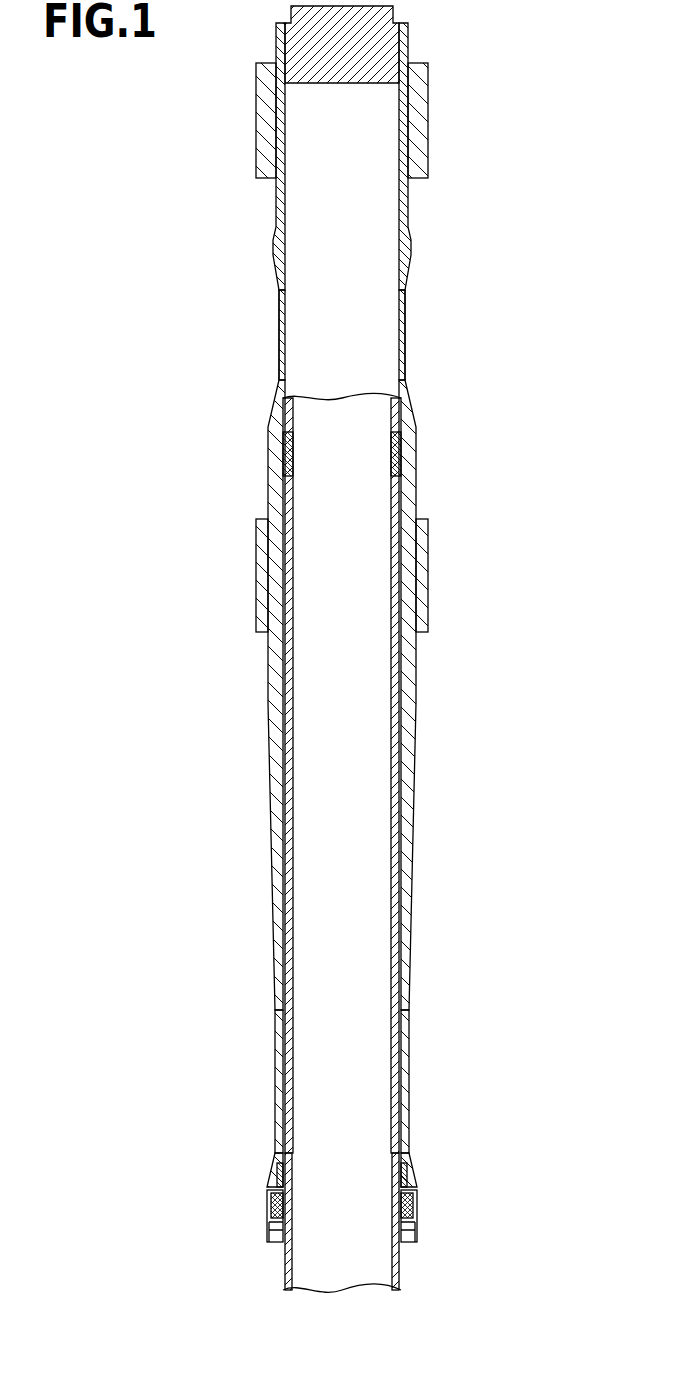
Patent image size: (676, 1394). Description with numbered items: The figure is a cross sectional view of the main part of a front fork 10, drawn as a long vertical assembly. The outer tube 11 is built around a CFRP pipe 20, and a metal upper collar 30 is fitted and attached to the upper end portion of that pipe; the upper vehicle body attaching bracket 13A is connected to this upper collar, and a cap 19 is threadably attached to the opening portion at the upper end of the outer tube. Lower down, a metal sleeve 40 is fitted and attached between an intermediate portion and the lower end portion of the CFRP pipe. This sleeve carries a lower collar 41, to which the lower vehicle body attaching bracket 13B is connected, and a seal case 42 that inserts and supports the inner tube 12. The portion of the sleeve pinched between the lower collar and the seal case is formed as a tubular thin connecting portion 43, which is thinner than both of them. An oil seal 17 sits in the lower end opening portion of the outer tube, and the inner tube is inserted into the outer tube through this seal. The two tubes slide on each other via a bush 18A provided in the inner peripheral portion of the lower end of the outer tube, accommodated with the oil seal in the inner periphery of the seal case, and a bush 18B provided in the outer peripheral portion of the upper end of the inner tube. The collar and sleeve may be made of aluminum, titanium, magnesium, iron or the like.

The front fork 10 is at (165, 230).
The cap 19 is at (392, 16).
The upper vehicle body attaching bracket 13A is at (428, 124).
The upper collar 30 is at (277, 205).
The outer tube 11 is at (279, 325).
The CFRP pipe 20 is at (279, 352).
The metal sleeve 40 is at (270, 793).
The thin connecting portion 43 is at (275, 1040).
The lower collar 41 is at (268, 488).
The bush 18B is at (402, 450).
The lower vehicle body attaching bracket 13B is at (428, 573).
The bush 18A is at (405, 1170).
The seal case 42 is at (268, 1198).
The oil seal 17 is at (405, 1205).
The inner tube 12 is at (285, 1273).